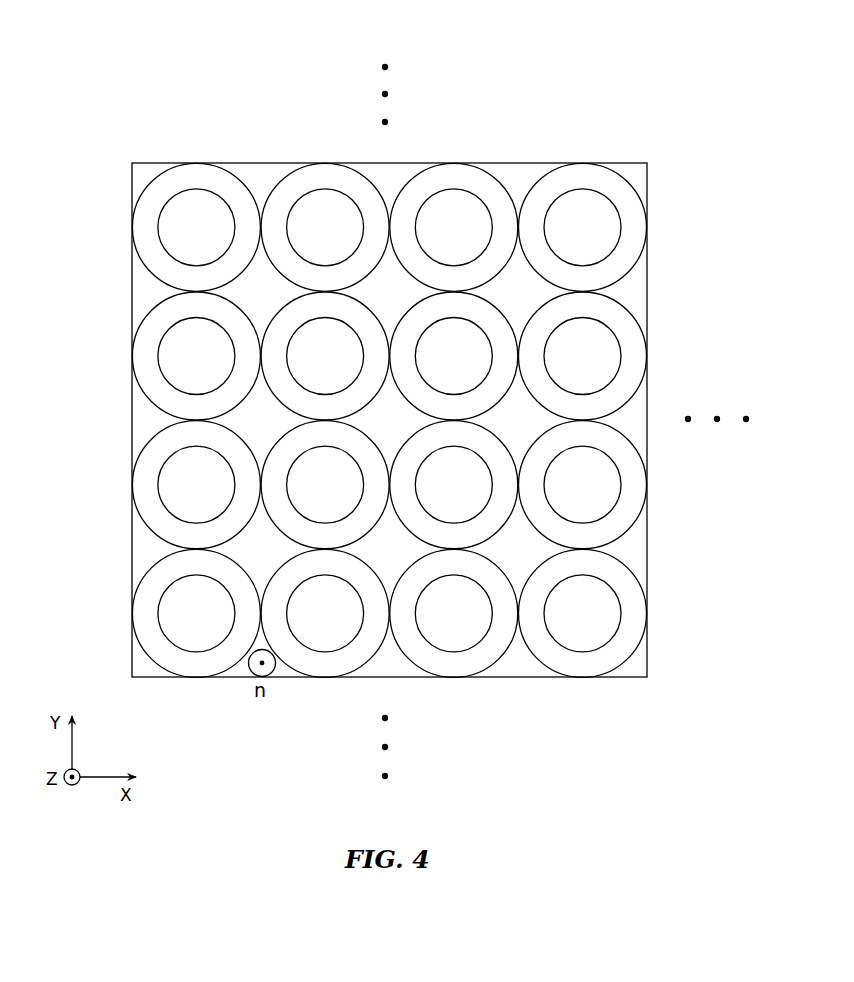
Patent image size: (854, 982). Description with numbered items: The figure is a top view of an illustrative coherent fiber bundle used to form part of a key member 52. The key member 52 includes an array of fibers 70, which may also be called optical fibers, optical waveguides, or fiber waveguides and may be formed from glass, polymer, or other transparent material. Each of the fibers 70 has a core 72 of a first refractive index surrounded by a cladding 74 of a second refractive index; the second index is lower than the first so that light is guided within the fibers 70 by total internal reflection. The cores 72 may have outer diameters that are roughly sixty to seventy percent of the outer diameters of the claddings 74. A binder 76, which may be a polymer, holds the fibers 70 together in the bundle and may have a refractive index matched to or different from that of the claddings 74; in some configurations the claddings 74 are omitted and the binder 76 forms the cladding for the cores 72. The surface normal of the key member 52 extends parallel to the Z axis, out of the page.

The key member 52 is at (418, 377).
The fibers 70 is at (418, 421).
The core 72 is at (633, 495).
The cladding 74 is at (598, 462).
The binder 76 is at (521, 184).